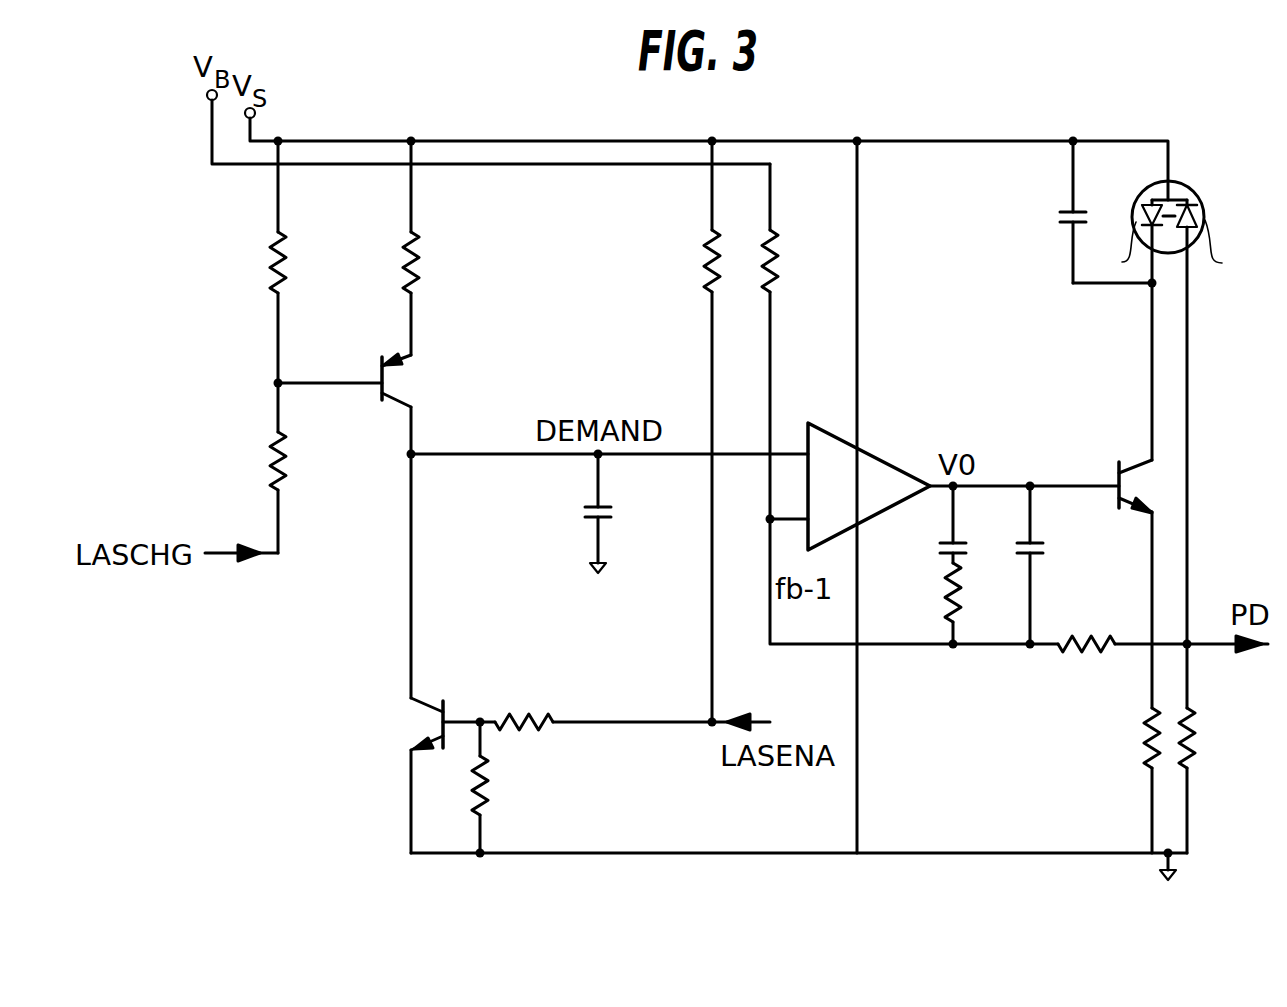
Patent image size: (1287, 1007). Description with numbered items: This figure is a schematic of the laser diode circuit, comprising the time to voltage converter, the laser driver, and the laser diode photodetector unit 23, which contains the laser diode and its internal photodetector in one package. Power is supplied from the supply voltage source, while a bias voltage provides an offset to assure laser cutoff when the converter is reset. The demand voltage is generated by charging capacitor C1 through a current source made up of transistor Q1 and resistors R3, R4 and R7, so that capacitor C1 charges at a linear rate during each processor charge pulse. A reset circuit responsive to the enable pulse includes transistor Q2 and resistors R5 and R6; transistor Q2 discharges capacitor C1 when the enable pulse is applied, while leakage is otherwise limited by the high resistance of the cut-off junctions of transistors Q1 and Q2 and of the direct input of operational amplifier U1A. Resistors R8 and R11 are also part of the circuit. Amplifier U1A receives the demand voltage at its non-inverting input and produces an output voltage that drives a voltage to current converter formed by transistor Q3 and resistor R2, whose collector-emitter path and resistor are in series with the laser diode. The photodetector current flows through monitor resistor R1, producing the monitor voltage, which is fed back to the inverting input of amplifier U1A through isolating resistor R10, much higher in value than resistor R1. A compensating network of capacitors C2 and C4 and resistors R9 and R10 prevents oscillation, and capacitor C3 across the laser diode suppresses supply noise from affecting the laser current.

The laser diode 23 is at (1203, 191).
The monitor resistor R1 is at (1210, 738).
The resistor R2 is at (1129, 738).
The resistor R3 is at (436, 261).
The resistor R4 is at (303, 459).
The resistor R5 is at (504, 785).
The resistor R6 is at (524, 704).
The resistor R7 is at (303, 261).
The resistor R8 is at (687, 260).
The resistor R9 is at (929, 594).
The isolating resistor R10 is at (1086, 627).
The resistor R11 is at (804, 260).
The capacitor C1 is at (580, 508).
The capacitor C2 is at (931, 526).
The capacitor C3 is at (1050, 212).
The capacitor C4 is at (1052, 565).
The PNP transistor Q1 is at (419, 380).
The NPN transistor Q2 is at (408, 724).
The NPN transistor Q3 is at (1111, 480).
The operational amplifier U1A is at (868, 455).